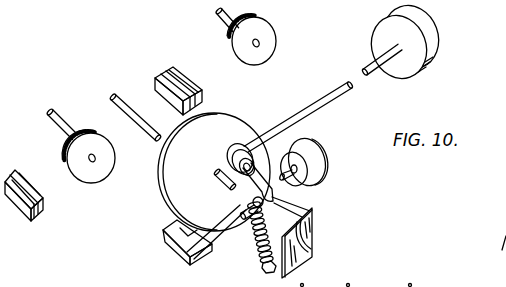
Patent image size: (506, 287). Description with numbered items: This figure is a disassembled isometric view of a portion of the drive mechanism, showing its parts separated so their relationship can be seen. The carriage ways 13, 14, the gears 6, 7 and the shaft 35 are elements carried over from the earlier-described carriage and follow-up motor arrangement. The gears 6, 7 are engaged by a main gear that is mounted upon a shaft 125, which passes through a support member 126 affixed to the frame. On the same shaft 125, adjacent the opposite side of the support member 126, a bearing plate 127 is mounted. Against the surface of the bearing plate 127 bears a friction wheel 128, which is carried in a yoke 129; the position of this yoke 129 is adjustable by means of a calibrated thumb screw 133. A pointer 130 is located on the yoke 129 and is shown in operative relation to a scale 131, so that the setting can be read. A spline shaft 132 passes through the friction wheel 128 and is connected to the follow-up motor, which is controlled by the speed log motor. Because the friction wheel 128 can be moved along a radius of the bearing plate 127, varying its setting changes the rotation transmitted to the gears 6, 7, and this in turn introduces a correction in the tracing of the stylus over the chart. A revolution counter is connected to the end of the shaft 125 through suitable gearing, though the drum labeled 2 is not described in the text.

The drum 2 is at (430, 30).
The gear 6 is at (268, 43).
The gear 7 is at (95, 172).
The carriage way 13 is at (30, 215).
The carriage way 14 is at (203, 97).
The shaft 35 is at (145, 135).
The shaft 125 is at (222, 190).
The support member 126 is at (193, 243).
The bearing plate 127 is at (247, 132).
The friction wheel 128 is at (255, 150).
The yoke 129 is at (307, 198).
The pointer 130 is at (312, 214).
The scale 131 is at (313, 243).
The spline shaft 132 is at (320, 100).
The calibrated thumb screw 133 is at (318, 163).